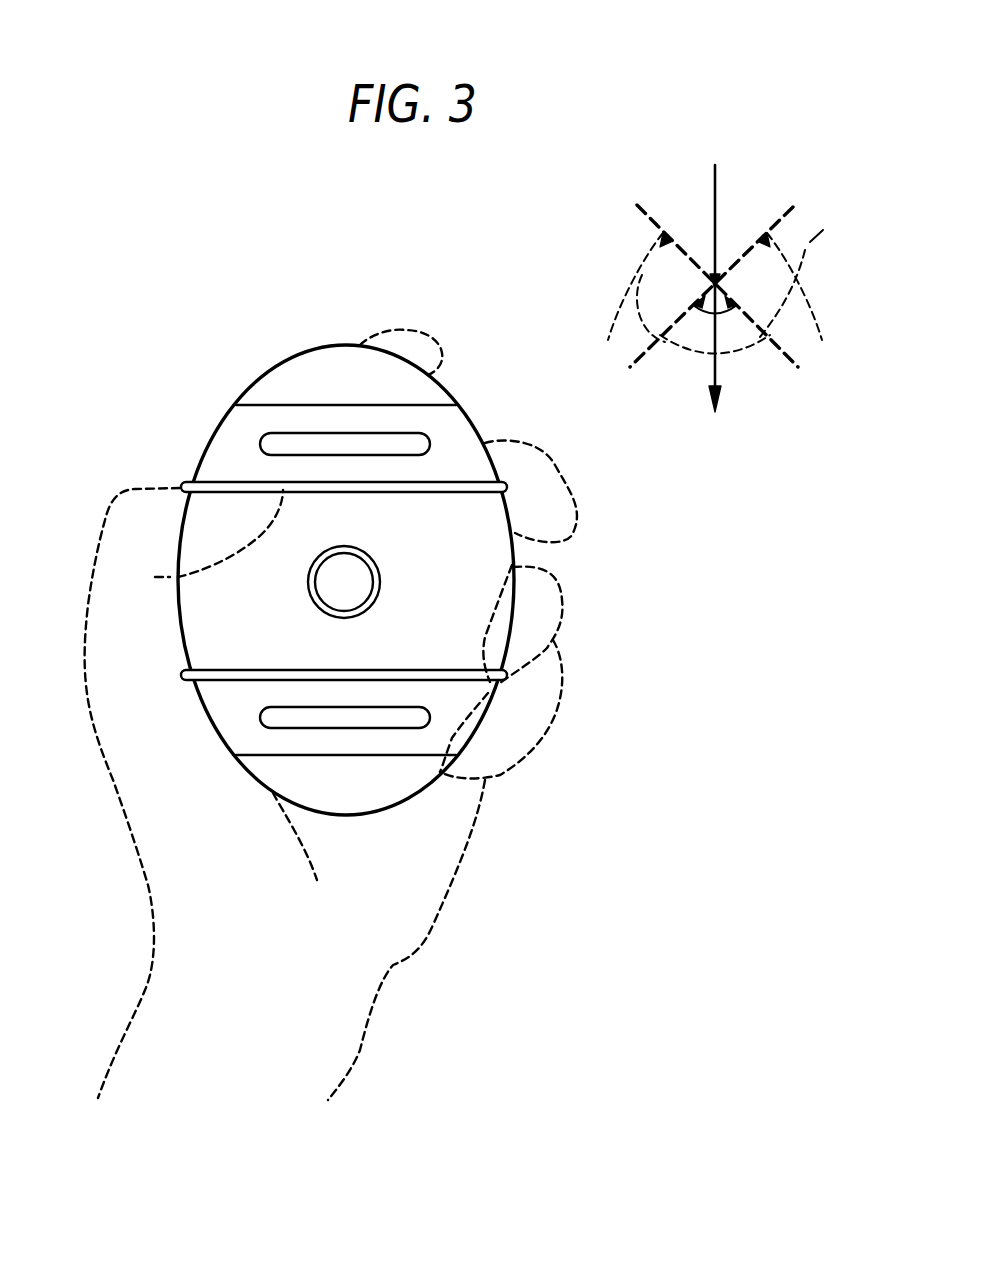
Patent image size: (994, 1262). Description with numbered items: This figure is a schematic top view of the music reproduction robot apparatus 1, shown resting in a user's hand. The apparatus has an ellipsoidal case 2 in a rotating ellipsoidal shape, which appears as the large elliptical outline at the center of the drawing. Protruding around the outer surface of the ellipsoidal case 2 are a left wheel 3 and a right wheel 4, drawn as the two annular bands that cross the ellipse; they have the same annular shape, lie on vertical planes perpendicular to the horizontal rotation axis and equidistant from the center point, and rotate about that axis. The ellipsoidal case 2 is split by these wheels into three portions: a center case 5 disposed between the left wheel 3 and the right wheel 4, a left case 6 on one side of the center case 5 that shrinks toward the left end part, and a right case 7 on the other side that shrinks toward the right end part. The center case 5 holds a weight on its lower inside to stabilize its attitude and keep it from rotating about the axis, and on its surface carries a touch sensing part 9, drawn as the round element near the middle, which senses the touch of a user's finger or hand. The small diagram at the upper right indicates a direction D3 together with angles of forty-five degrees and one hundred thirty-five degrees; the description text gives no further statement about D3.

The music reproduction robot apparatus 1 is at (319, 528).
The ellipsoidal case 2 is at (563, 553).
The left wheel 3 is at (186, 486).
The right wheel 4 is at (180, 676).
The center case 5 is at (178, 594).
The left case 6 is at (466, 420).
The right case 7 is at (478, 728).
The touch sensing part 9 is at (380, 592).
The direction D3 is at (715, 368).